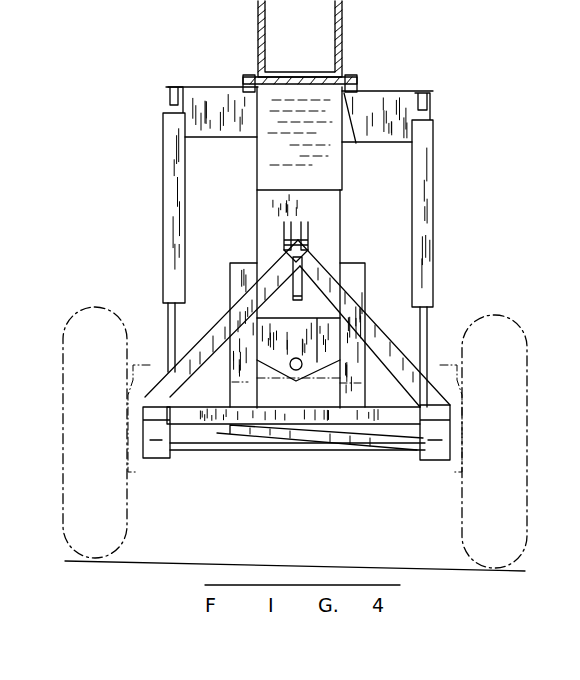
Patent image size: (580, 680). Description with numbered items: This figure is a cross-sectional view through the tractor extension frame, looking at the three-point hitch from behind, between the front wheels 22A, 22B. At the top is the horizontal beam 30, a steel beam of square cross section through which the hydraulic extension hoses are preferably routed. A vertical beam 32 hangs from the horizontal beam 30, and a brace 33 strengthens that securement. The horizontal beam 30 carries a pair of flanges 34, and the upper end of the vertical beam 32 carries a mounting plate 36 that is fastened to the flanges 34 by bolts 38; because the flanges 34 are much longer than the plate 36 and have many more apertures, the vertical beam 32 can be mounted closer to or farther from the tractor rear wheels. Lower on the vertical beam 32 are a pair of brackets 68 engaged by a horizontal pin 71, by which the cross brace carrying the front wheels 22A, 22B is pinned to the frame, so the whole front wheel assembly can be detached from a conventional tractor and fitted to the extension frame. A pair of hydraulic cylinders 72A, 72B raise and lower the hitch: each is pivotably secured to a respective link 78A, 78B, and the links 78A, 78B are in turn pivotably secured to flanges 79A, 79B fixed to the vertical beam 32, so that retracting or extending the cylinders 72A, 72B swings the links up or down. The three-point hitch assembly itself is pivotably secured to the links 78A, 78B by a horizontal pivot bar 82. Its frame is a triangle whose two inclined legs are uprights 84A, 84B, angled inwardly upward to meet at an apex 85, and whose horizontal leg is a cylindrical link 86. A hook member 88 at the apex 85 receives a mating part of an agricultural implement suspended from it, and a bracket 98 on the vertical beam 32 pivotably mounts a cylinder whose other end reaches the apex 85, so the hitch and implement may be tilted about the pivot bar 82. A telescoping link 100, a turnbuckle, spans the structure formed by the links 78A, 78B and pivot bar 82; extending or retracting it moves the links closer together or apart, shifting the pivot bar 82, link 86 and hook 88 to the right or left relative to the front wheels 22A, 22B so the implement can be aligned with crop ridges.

The front wheel 22A is at (527, 345).
The front wheel 22B is at (128, 528).
The horizontal beam 30 is at (341, 27).
The vertical beam 32 is at (268, 200).
The brace 33 is at (273, 148).
The flanges 34 is at (344, 72).
The mounting plate 36 is at (362, 130).
The bolts 38 is at (351, 79).
The brackets 68 is at (262, 325).
The horizontal pin 71 is at (296, 358).
The cylinder 72A is at (434, 172).
The cylinder 72B is at (165, 158).
The link 78A is at (403, 453).
The link 78B is at (177, 450).
The flange 79A is at (353, 275).
The flange 79B is at (230, 265).
The pivot bar 82 is at (322, 451).
The upright 84A is at (387, 347).
The upright 84B is at (208, 342).
The apex 85 is at (283, 248).
The horizontal link 86 is at (265, 415).
The hook member 88 is at (313, 258).
The bracket 98 is at (308, 228).
The telescoping link 100 is at (310, 432).